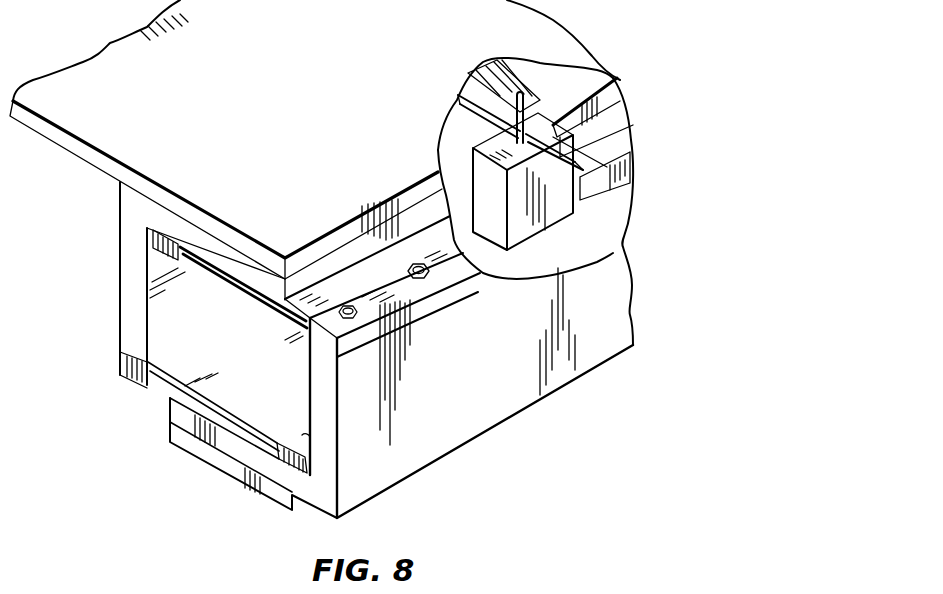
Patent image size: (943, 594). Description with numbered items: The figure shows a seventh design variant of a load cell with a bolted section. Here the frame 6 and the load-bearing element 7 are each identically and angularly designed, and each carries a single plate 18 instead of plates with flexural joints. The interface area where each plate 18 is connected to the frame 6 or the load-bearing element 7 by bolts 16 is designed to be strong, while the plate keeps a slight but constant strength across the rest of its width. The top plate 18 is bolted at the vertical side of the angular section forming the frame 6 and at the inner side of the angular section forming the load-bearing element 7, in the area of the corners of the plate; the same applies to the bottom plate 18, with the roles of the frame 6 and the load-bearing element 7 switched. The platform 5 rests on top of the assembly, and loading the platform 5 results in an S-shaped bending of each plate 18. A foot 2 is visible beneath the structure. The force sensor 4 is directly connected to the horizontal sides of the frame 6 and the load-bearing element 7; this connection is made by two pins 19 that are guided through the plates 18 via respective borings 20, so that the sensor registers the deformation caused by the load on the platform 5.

The foot 2 is at (222, 461).
The force sensor 4 is at (552, 212).
The platform 5 is at (120, 70).
The frame 6 is at (132, 263).
The load-bearing element 7 is at (608, 317).
The bolts 16 is at (360, 315).
The plate 18 is at (223, 283).
The pins 19 is at (608, 102).
The borings 20 is at (604, 138).